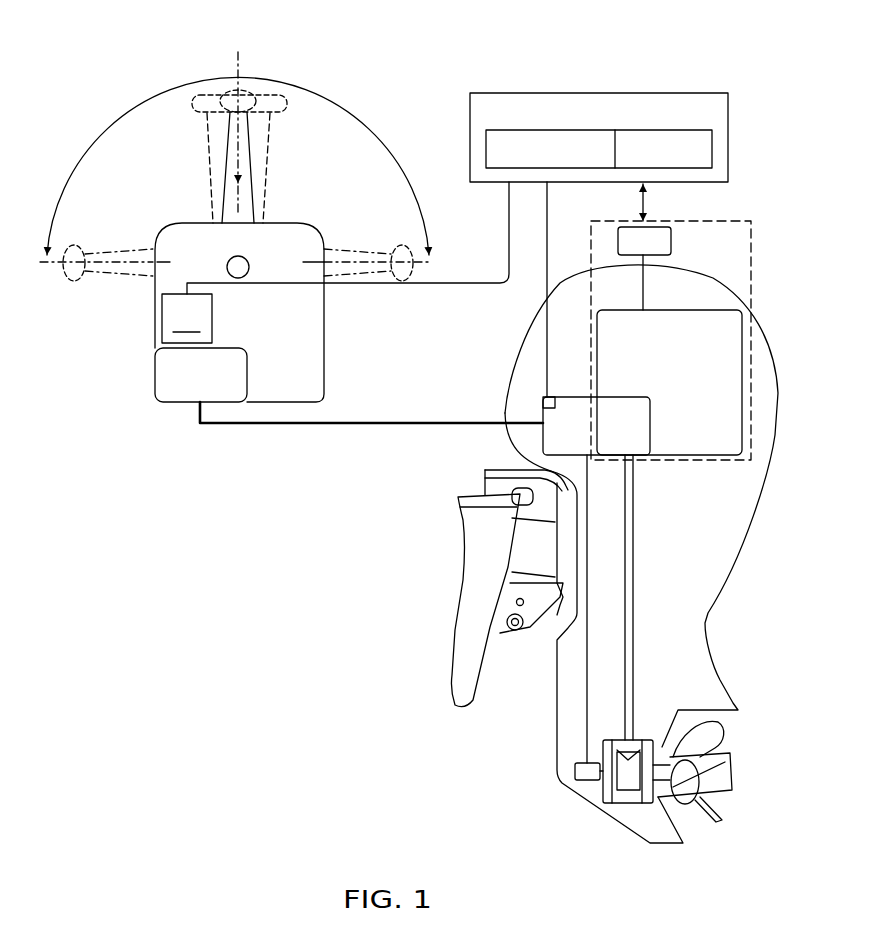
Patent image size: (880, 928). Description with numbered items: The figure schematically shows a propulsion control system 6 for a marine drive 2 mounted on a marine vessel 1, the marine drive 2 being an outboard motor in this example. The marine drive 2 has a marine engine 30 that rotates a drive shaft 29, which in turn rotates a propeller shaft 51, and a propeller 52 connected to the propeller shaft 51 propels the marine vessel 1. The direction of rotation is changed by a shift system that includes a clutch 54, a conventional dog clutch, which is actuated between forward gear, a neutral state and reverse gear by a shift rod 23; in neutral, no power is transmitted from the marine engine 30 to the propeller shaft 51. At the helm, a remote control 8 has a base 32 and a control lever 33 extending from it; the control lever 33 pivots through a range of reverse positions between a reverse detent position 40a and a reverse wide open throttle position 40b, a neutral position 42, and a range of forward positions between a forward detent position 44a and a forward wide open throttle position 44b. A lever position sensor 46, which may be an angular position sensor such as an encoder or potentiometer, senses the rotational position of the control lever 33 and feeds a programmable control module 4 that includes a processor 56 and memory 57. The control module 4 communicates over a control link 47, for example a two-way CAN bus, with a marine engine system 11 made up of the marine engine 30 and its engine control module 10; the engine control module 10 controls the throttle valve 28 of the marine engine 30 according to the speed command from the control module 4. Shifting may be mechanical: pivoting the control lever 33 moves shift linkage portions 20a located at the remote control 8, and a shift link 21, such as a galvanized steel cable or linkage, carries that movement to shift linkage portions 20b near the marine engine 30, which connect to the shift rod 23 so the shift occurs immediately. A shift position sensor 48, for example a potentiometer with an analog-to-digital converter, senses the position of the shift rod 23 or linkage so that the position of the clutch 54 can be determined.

The marine vessel 1 is at (488, 660).
The marine drive 2 is at (759, 287).
The control module 4 is at (595, 125).
The propulsion control system 6 is at (317, 463).
The remote control 8 is at (82, 119).
The engine control module (ECM) 10 is at (672, 244).
The marine engine system 11 is at (708, 218).
The portions of shift linkage 20a is at (184, 405).
The portions of shift linkage 20b is at (555, 433).
The shift link 21 is at (278, 427).
The shift rod 23 is at (587, 727).
The throttle valve 28 is at (637, 416).
The drive shaft 29 is at (633, 538).
The marine engine 30 is at (668, 310).
The base 32 is at (153, 331).
The control lever 33 is at (221, 117).
The reverse detent position 40a is at (287, 89).
The reverse wide open throttle position 40b is at (386, 243).
The neutral position 42 is at (222, 87).
The forward detent position 44a is at (186, 101).
The forward wide open throttle position 44b is at (71, 288).
The lever position sensor 46 is at (335, 262).
The control link 47 is at (641, 203).
The shift position sensor 48 is at (556, 403).
The propeller shaft 51 is at (690, 784).
The propeller 52 is at (712, 735).
The clutch 54 is at (628, 788).
The processor 56 is at (486, 151).
The memory 57 is at (712, 151).